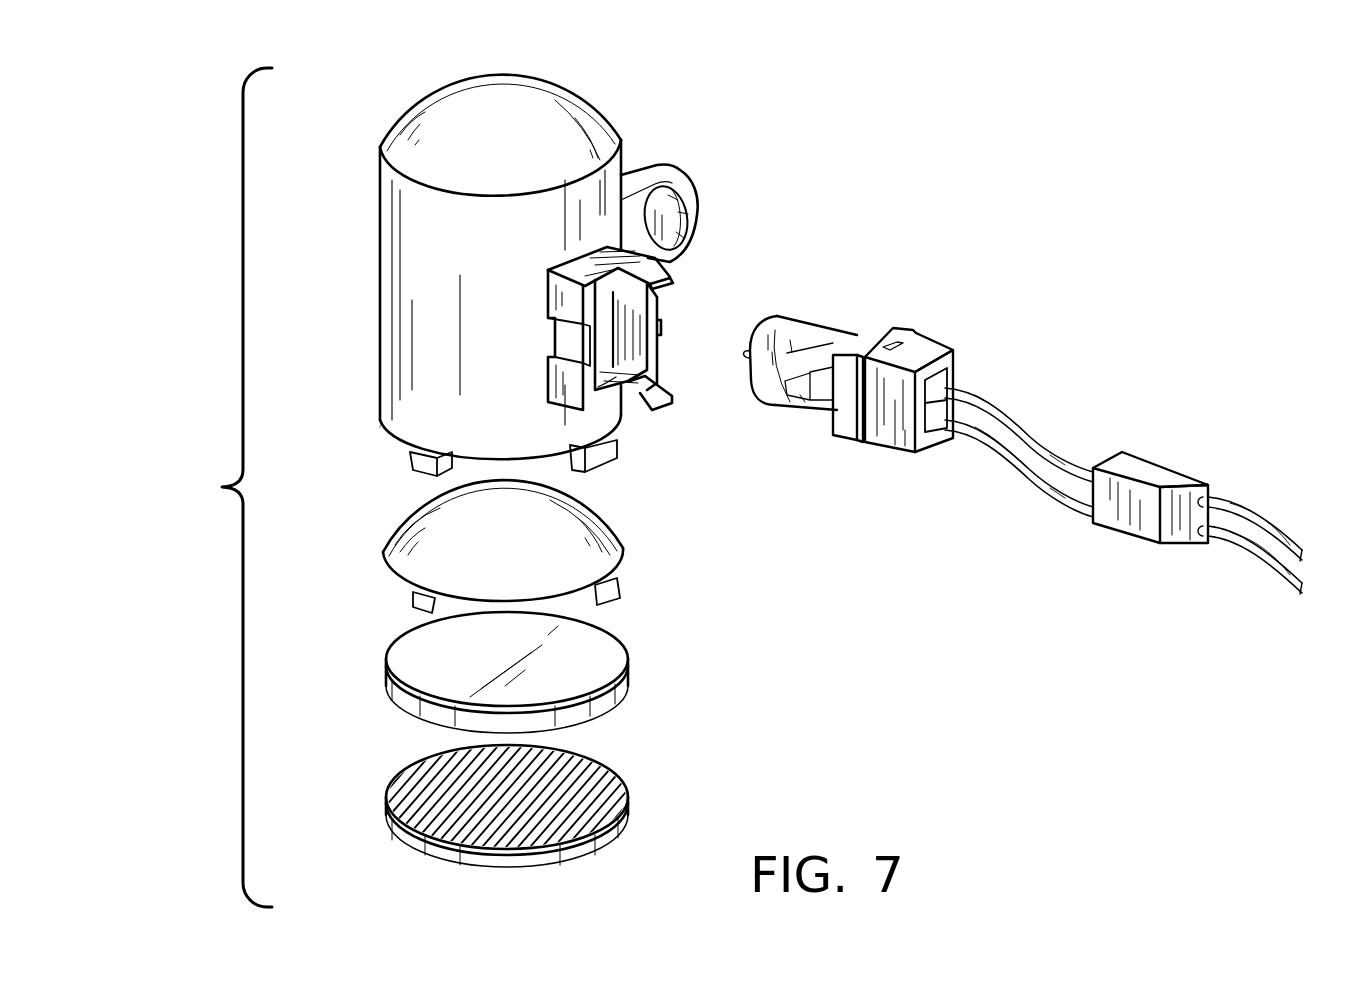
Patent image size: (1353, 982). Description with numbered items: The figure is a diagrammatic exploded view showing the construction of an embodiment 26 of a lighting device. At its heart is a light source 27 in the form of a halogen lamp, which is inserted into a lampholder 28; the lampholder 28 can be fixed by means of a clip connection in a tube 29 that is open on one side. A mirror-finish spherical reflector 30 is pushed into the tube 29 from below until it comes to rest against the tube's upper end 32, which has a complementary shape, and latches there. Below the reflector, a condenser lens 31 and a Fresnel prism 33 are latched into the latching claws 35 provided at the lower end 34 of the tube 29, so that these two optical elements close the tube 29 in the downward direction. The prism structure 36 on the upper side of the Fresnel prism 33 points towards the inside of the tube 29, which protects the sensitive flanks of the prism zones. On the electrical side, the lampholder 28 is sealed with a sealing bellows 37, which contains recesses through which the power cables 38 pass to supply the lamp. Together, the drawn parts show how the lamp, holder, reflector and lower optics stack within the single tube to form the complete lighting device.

The embodiment of a lighting device 26 is at (905, 150).
The light source 27 is at (793, 326).
The lampholder 28 is at (920, 350).
The tube 29 is at (410, 298).
The spherical reflector 30 is at (615, 553).
The condenser lens 31 is at (620, 692).
The upper end of the tube 32 is at (522, 112).
The Fresnel prism 33 is at (610, 797).
The lower end of the tube 34 is at (383, 448).
The latching claws 35 is at (617, 463).
The prism structure 36 is at (408, 782).
The sealing bellows 37 is at (1148, 466).
The power cables 38 is at (1013, 456).